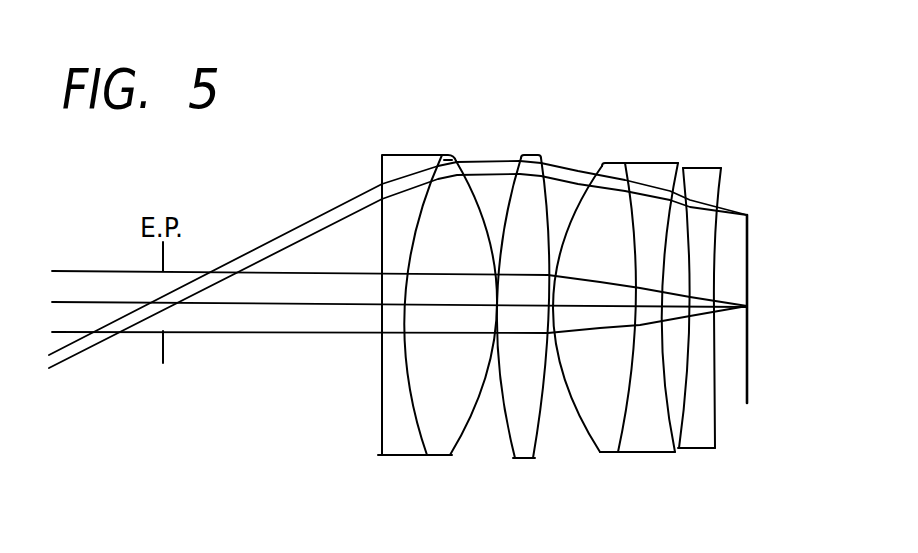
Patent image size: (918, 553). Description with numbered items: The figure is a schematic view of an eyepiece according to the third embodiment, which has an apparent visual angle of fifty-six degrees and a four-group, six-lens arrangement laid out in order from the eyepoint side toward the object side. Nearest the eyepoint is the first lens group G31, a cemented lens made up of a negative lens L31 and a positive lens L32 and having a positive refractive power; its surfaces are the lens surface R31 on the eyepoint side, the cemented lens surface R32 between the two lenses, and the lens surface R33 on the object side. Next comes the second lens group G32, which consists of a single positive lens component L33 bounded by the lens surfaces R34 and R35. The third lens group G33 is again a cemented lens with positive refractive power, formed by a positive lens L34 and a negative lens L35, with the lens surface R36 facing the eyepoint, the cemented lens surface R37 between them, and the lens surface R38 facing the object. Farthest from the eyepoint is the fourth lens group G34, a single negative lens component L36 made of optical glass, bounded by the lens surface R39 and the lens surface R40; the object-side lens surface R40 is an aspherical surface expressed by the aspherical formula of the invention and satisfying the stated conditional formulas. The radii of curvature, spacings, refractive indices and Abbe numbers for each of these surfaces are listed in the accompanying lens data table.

The first lens group G31 is at (470, 57).
The second lens group G32 is at (557, 57).
The third lens group G33 is at (695, 57).
The fourth lens group G34 is at (757, 57).
The negative lens L31 is at (397, 443).
The positive lens L32 is at (447, 437).
The positive lens component L33 is at (527, 443).
The positive lens L34 is at (610, 440).
The negative lens L35 is at (652, 440).
The negative lens component L36 is at (700, 440).
The lens surface R31 is at (371, 192).
The lens surface R32 is at (442, 155).
The lens surface R33 is at (466, 176).
The lens surface R34 is at (505, 200).
The lens surface R35 is at (547, 200).
The lens surface R36 is at (580, 195).
The lens surface R37 is at (633, 210).
The lens surface R38 is at (667, 228).
The lens surface R39 is at (711, 176).
The lens surface R40 is at (723, 210).